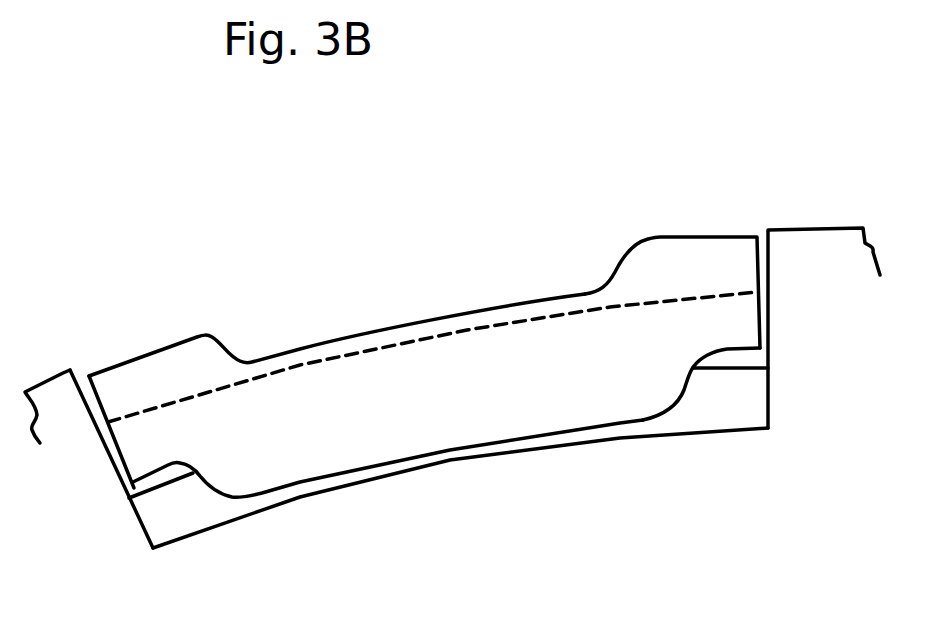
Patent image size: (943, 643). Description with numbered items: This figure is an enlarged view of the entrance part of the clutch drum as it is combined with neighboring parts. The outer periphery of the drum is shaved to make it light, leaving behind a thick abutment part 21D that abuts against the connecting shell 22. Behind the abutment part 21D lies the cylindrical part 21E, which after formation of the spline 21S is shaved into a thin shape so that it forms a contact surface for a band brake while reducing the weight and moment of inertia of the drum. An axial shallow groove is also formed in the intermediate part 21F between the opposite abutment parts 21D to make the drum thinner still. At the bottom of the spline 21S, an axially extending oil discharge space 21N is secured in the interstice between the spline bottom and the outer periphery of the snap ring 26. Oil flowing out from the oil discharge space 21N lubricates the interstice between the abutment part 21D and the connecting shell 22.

The abutment part 21D is at (627, 243).
The cylindrical part 21E is at (190, 395).
The intermediate part 21F is at (420, 318).
The oil discharge space 21N is at (740, 357).
The spline 21S is at (212, 483).
The connecting shell 22 is at (783, 230).
The snap ring 26 is at (738, 405).